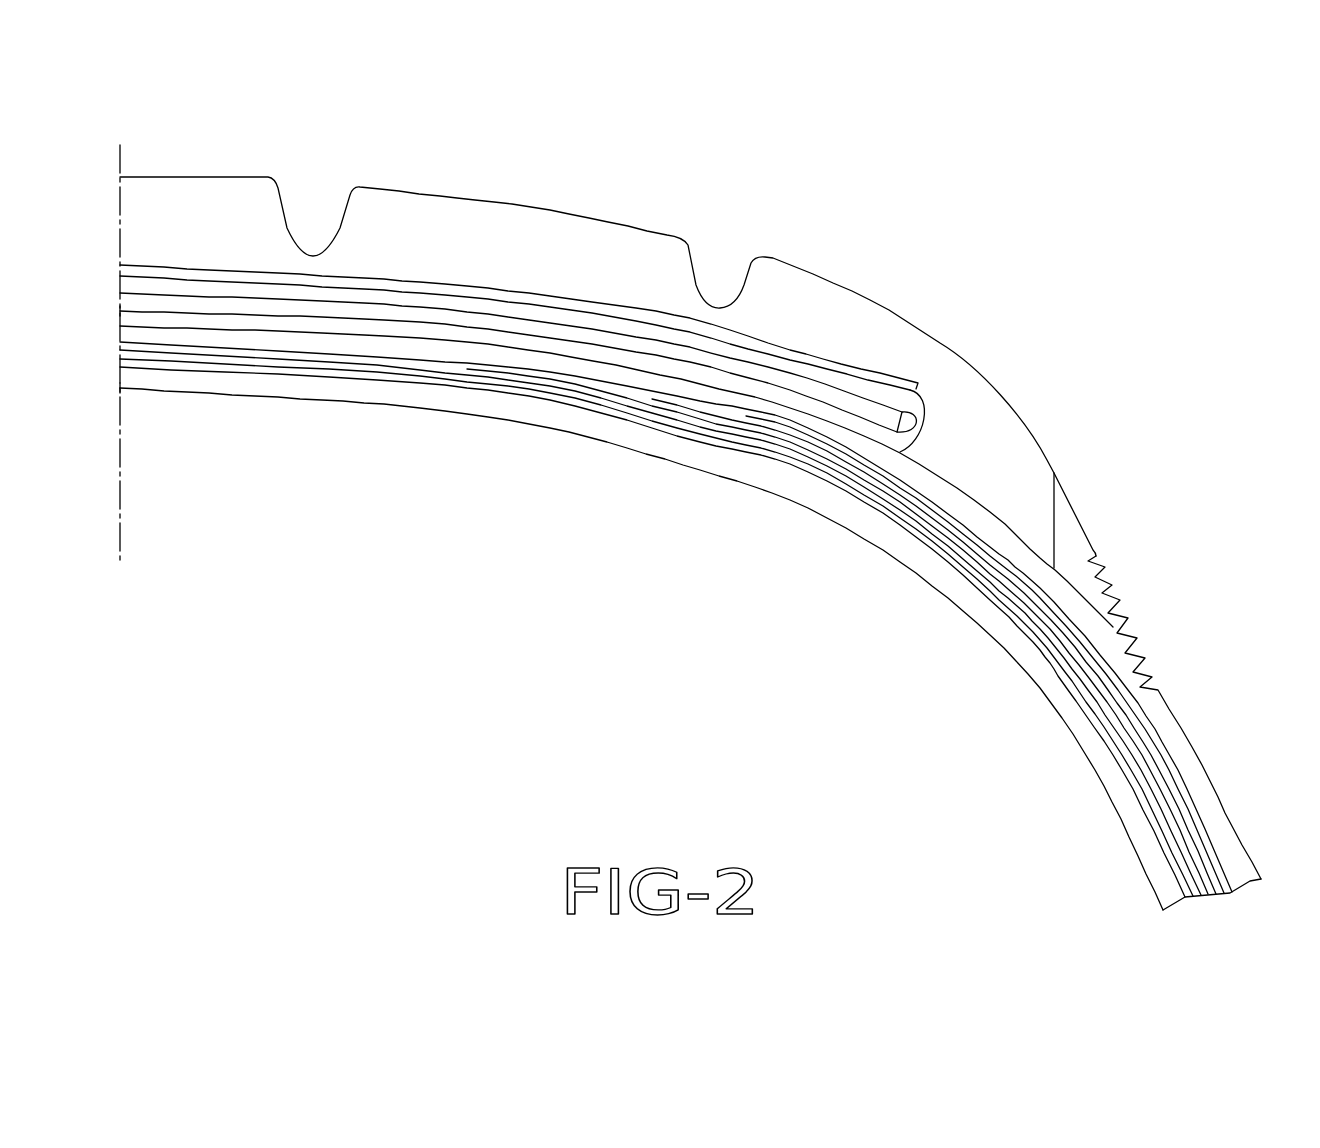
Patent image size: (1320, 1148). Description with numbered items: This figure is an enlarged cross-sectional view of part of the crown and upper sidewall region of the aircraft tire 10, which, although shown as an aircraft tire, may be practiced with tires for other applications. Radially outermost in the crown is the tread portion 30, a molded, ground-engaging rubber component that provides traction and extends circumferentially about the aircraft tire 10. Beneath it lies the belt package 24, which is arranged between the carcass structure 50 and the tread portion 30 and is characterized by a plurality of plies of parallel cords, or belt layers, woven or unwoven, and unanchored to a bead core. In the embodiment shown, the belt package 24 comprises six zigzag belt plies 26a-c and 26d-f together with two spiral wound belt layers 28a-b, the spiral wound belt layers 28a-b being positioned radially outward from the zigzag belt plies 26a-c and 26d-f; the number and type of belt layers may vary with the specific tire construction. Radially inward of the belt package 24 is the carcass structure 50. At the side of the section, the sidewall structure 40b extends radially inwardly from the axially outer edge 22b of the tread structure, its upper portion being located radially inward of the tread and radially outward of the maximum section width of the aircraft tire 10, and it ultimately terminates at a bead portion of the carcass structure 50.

The aircraft tire 10 is at (1158, 176).
The tread portion 30 is at (546, 201).
The belt package 24 is at (425, 289).
The axially outer edge 22b is at (930, 430).
The spiral wound belt layers 28a-b is at (430, 333).
The zigzag belt plies 26a-c is at (335, 340).
The zigzag belt plies 26d-f is at (553, 328).
The carcass structure 50 is at (181, 393).
The sidewall structure 40b is at (1198, 762).